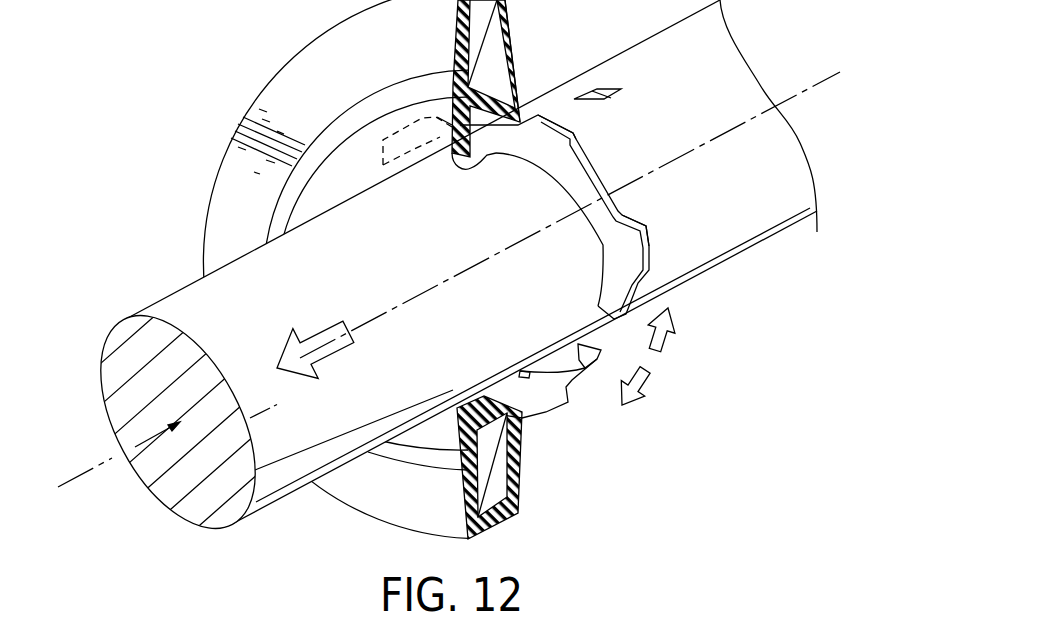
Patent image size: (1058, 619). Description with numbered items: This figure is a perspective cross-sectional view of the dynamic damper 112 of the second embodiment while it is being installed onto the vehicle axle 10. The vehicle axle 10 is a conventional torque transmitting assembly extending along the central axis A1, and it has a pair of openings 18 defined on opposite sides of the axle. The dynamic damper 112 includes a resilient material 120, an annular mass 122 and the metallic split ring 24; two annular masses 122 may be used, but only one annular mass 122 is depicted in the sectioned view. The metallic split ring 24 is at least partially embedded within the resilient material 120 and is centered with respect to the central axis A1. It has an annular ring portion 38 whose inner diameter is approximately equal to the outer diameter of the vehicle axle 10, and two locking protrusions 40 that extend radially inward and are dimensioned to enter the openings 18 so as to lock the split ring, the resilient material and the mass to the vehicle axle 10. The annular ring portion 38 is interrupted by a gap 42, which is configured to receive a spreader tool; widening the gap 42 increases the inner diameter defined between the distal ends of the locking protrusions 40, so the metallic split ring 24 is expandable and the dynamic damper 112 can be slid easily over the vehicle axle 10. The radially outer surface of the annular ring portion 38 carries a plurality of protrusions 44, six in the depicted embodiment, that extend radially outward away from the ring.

The vehicle axle 10 is at (283, 499).
The openings 18 is at (612, 84).
The metallic split ring 24 is at (656, 232).
The annular ring portion 38 is at (586, 190).
The locking protrusions 40 is at (470, 168).
The gap 42 is at (592, 343).
The protrusions 44 is at (398, 144).
The dynamic damper 112 is at (292, 53).
The resilient material 120 is at (521, 98).
The annular mass 122 is at (490, 30).
The central axis A1 is at (77, 473).